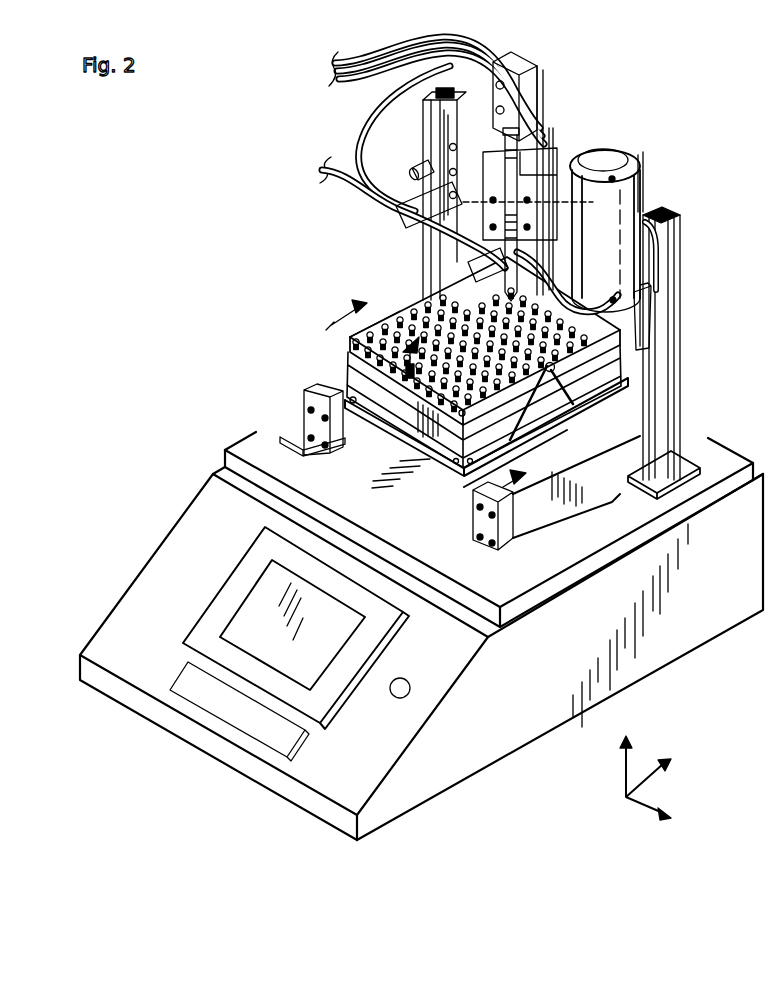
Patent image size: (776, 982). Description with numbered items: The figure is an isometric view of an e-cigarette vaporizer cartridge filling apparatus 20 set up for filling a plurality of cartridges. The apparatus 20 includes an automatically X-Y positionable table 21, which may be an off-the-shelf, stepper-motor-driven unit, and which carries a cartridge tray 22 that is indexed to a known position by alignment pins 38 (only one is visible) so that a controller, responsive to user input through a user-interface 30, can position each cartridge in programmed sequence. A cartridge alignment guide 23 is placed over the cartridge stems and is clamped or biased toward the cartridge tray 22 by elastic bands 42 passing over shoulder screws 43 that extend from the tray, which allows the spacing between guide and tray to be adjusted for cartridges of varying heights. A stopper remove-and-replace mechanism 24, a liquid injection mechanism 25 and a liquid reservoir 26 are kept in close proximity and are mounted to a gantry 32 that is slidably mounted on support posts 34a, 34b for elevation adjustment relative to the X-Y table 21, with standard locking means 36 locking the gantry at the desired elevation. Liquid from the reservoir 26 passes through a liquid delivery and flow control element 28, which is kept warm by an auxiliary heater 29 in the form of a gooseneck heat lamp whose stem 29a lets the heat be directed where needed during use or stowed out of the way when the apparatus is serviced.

The e-cigarette vaporizer cartridge filling apparatus 20 is at (707, 98).
The X-Y positionable table 21 is at (450, 465).
The cartridge tray 22 is at (356, 364).
The cartridge alignment guide 23 is at (408, 310).
The stopper remove-and-replace mechanism 24 is at (456, 290).
The liquid injection mechanism 25 is at (557, 104).
The liquid reservoir 26 is at (604, 160).
The liquid delivery and flow control element 28 is at (500, 238).
The auxiliary heater 29 is at (464, 206).
The stem 29a is at (358, 152).
The user-interface 30 is at (275, 636).
The gantry 32 is at (440, 132).
The support post 34a is at (681, 306).
The support post 34b is at (427, 264).
The locking means 36 is at (414, 176).
The alignment pin 38 is at (406, 368).
The elastic band 42 is at (518, 419).
The shoulder screw 43 is at (556, 372).